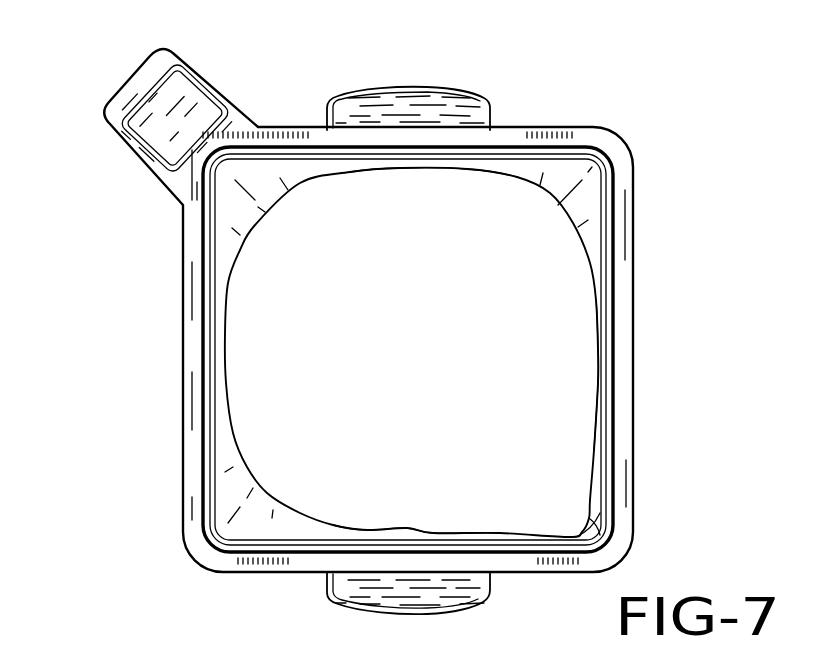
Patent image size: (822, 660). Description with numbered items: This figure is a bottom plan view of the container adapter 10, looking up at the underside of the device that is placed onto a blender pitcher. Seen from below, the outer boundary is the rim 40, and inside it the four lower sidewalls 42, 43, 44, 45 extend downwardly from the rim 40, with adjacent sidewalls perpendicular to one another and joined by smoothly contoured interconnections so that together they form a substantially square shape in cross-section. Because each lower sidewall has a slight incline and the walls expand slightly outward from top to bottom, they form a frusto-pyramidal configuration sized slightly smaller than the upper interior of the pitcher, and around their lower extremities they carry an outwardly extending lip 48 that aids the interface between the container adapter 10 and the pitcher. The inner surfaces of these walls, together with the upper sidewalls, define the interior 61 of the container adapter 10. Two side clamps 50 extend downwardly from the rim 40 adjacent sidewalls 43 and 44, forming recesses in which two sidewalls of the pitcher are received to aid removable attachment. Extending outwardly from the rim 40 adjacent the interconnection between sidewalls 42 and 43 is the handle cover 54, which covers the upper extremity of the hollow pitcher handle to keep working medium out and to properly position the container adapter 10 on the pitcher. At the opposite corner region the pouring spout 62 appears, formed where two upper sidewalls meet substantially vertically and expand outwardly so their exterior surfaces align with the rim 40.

The container adapter 10 is at (700, 255).
The rim 40 is at (257, 137).
The lower sidewall 42 is at (220, 330).
The lower sidewall 43 is at (395, 165).
The lower sidewall 44 is at (380, 533).
The lower sidewall 45 is at (597, 323).
The outwardly extending lip 48 is at (208, 397).
The side clamps 50 is at (392, 108).
The handle cover 54 is at (140, 93).
The interior 61 is at (278, 280).
The pouring spout 62 is at (568, 515).